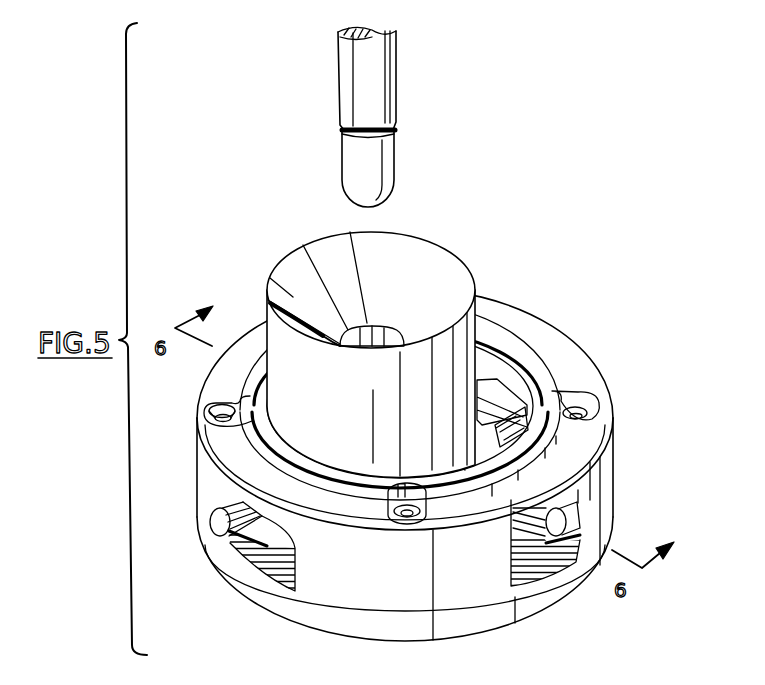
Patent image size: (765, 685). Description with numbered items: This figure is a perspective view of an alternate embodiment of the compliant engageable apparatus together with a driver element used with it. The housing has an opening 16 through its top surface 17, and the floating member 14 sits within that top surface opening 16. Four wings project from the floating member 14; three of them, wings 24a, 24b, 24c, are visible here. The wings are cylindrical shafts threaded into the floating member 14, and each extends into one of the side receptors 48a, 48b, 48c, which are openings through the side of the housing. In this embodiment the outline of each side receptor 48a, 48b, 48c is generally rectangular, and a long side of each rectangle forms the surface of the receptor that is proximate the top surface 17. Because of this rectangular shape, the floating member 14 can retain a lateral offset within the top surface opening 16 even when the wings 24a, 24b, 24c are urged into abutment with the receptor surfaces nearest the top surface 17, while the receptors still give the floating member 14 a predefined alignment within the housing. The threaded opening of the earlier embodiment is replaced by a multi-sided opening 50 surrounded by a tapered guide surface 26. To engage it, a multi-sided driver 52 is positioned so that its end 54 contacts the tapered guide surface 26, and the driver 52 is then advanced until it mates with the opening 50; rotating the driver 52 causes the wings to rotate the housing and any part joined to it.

The floating member 14 is at (293, 384).
The opening 16 is at (489, 340).
The top surface 17 is at (590, 373).
The wing 24a is at (218, 516).
The wing 24b is at (562, 515).
The wing 24c is at (487, 393).
The tapered guide surface 26 is at (435, 260).
The side receptor 48a is at (296, 563).
The side receptor 48b is at (532, 553).
The side receptor 48c is at (527, 417).
The multi-sided opening 50 is at (387, 336).
The multi-sided driver 52 is at (392, 77).
The end 54 is at (393, 166).